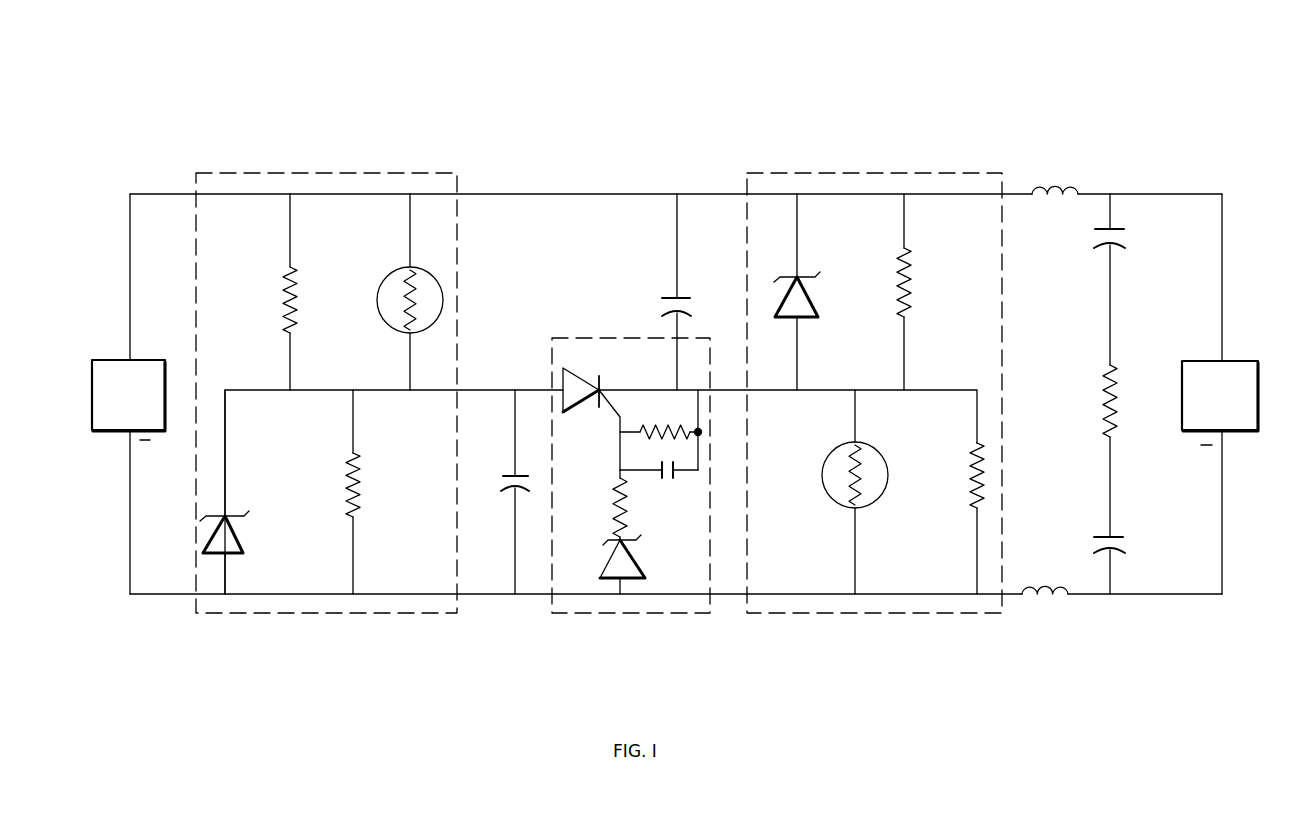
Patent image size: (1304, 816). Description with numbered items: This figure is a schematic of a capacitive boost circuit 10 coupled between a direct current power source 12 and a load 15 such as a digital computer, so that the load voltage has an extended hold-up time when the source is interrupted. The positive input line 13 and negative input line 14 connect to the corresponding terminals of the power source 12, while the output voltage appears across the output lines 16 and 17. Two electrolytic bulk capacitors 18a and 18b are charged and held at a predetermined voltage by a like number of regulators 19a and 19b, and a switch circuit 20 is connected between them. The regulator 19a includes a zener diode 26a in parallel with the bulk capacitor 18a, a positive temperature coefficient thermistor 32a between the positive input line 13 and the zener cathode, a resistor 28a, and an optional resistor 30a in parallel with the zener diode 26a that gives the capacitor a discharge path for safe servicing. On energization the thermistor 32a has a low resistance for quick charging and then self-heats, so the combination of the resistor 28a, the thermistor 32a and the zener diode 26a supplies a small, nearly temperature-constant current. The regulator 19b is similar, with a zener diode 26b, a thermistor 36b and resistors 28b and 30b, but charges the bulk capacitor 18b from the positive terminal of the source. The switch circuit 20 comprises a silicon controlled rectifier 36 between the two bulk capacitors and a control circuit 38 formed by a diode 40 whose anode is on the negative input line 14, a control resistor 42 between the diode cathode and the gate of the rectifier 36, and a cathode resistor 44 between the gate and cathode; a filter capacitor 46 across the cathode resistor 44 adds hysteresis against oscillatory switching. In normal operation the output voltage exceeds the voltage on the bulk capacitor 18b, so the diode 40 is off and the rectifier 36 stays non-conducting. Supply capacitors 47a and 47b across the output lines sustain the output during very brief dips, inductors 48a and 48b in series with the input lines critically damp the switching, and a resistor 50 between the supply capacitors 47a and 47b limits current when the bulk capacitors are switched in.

The capacitive boost circuit 10 is at (1095, 103).
The direct current power source 12 is at (126, 360).
The positive input line 13 is at (167, 194).
The negative input line 14 is at (170, 594).
The load 15 is at (1258, 407).
The output line 16 is at (1143, 194).
The output line 17 is at (1193, 596).
The bulk capacitor 18a is at (513, 471).
The bulk capacitor 18b is at (672, 295).
The regulator 19a is at (300, 173).
The regulator 19b is at (885, 173).
The switch circuit 20 is at (593, 338).
The zener diode 26a is at (245, 529).
The zener diode 26b is at (817, 298).
The resistor 28a is at (284, 280).
The resistor 28b is at (970, 470).
The resistor 30a is at (350, 456).
The resistor 30b is at (913, 265).
The positive temperature coefficient thermistor 32a is at (393, 270).
The silicon controlled rectifier 36 is at (585, 375).
The lamp 36b is at (825, 457).
The control circuit 38 is at (662, 538).
The diode 40 is at (607, 543).
The control resistor 42 is at (625, 512).
The cathode resistor 44 is at (668, 425).
The filter capacitor 46 is at (680, 478).
The supply capacitor 47a is at (1115, 246).
The supply capacitor 47b is at (1102, 532).
The inductor 48a is at (1072, 206).
The inductor 48b is at (1060, 584).
The resistor 50 is at (1102, 418).